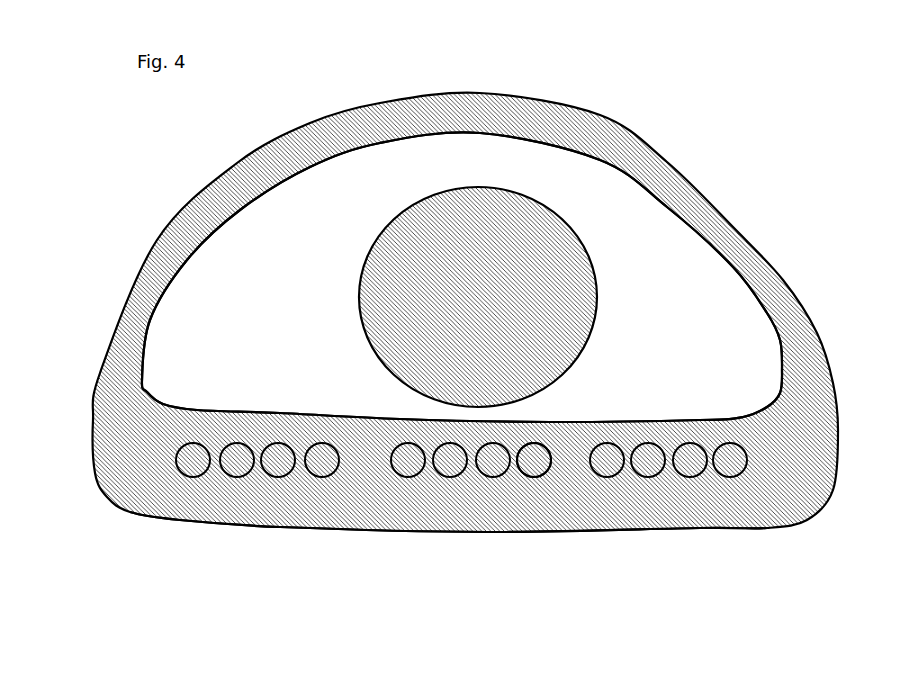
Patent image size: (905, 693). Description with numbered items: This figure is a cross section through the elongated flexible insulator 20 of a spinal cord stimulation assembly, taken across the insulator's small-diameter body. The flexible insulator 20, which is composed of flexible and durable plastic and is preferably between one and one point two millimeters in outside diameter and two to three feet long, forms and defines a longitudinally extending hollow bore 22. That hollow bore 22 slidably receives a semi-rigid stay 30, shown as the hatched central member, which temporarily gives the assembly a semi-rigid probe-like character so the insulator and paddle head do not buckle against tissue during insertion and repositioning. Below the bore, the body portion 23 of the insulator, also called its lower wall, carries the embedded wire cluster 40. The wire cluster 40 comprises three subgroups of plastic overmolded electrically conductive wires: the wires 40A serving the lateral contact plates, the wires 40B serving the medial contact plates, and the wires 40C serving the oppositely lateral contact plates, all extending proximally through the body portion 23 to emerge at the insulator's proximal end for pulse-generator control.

The flexible insulator 20 is at (655, 157).
The longitudinally extending hollow bore 22 is at (212, 350).
The body portion 23 is at (307, 512).
The semi-rigid stay 30 is at (468, 205).
The wire cluster 40 is at (440, 496).
The electrically conductive wires 40A is at (183, 466).
The electrically conductive wires 40B is at (540, 468).
The electrically conductive wires 40C is at (740, 470).